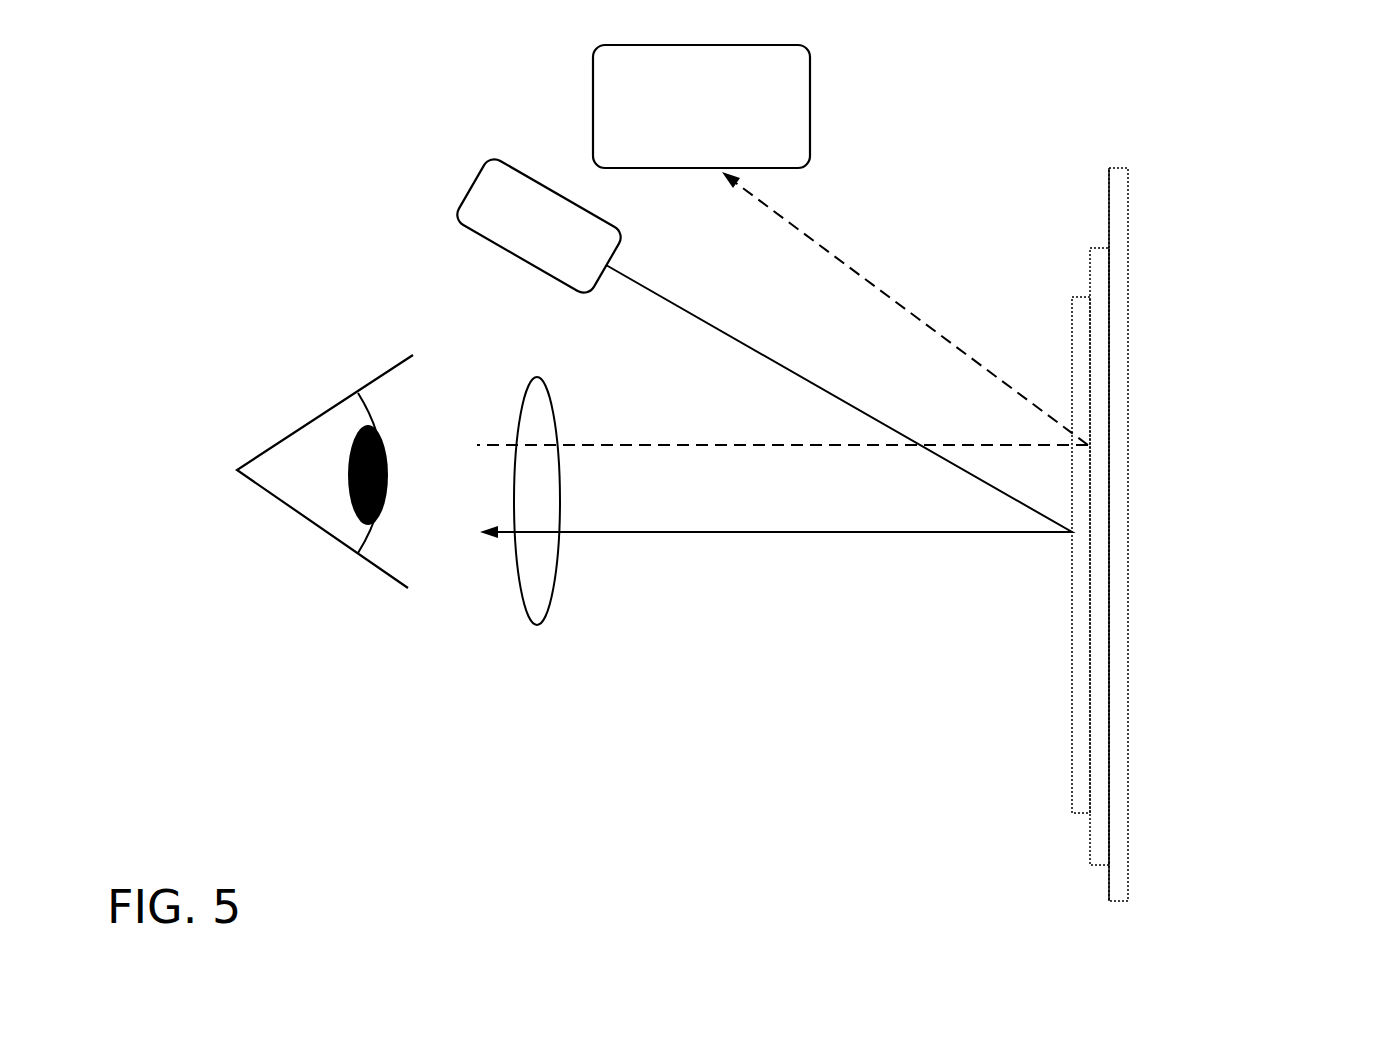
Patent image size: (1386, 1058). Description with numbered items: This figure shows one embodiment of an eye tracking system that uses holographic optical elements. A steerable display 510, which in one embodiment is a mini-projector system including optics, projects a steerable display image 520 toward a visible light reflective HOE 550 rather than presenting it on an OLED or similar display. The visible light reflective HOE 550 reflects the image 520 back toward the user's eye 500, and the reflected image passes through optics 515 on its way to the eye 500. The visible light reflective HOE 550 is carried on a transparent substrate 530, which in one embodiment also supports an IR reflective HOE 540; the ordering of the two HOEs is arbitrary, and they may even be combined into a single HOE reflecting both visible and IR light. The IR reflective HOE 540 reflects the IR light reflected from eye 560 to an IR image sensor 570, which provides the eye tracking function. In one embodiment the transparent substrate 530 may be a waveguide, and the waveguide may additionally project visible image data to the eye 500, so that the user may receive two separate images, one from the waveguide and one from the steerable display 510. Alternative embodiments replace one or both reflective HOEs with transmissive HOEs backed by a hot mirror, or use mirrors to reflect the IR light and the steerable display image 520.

The eye 500 is at (296, 458).
The steerable display 510 is at (482, 218).
The optics 515 is at (528, 467).
The steerable display image 520 is at (776, 430).
The transparent substrate 530 is at (1142, 327).
The IR reflective HOE 540 is at (1100, 232).
The visible light reflective HOE 550 is at (1067, 281).
The IR light reflected from eye 560 is at (782, 308).
The IR image sensor 570 is at (701, 106).